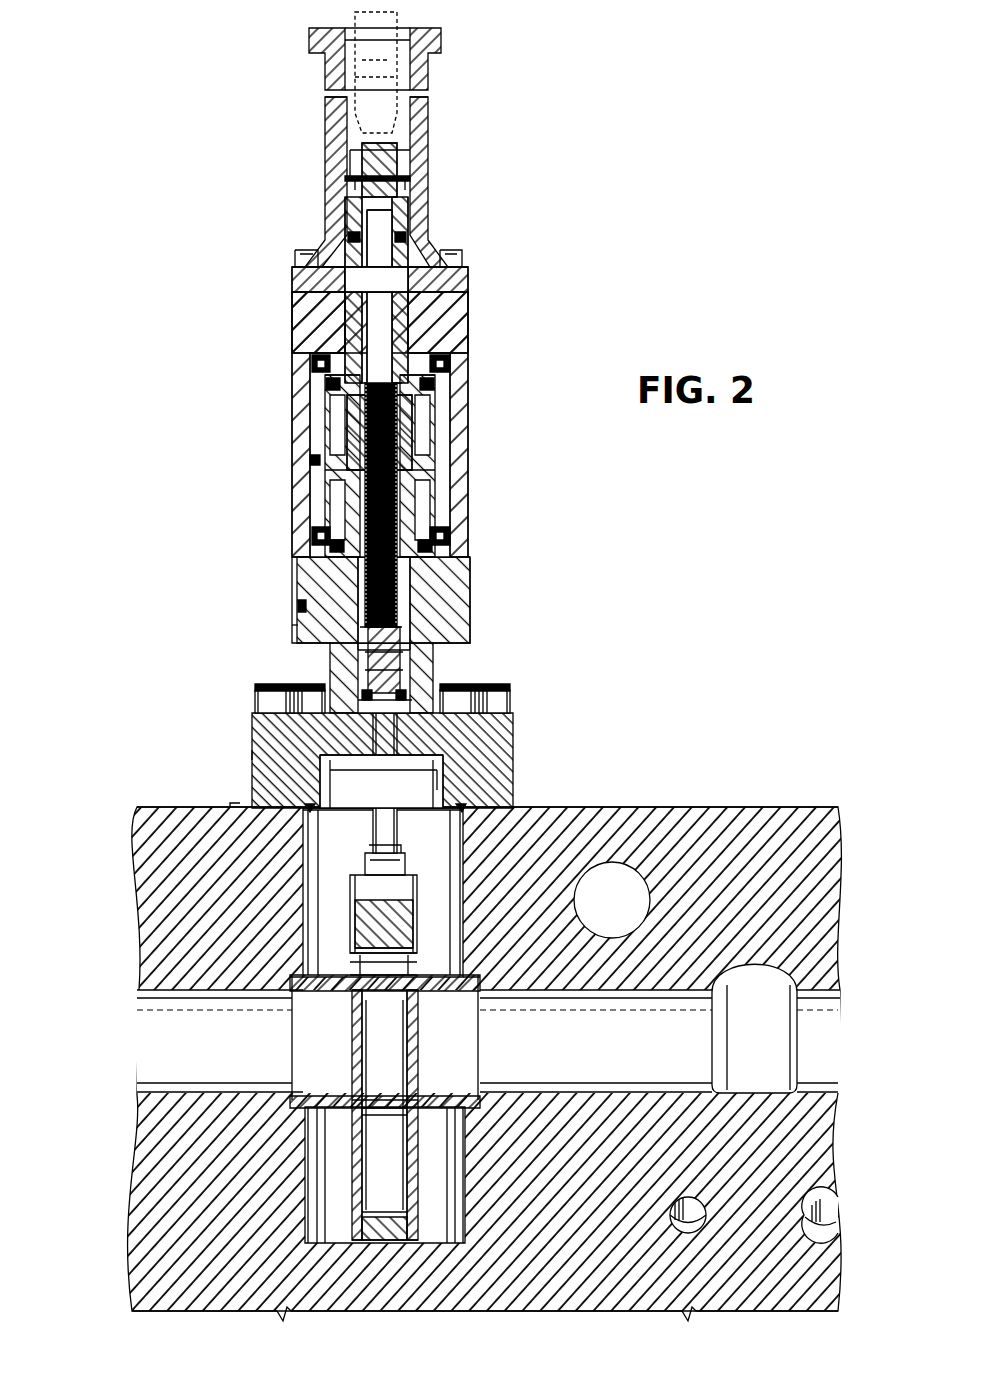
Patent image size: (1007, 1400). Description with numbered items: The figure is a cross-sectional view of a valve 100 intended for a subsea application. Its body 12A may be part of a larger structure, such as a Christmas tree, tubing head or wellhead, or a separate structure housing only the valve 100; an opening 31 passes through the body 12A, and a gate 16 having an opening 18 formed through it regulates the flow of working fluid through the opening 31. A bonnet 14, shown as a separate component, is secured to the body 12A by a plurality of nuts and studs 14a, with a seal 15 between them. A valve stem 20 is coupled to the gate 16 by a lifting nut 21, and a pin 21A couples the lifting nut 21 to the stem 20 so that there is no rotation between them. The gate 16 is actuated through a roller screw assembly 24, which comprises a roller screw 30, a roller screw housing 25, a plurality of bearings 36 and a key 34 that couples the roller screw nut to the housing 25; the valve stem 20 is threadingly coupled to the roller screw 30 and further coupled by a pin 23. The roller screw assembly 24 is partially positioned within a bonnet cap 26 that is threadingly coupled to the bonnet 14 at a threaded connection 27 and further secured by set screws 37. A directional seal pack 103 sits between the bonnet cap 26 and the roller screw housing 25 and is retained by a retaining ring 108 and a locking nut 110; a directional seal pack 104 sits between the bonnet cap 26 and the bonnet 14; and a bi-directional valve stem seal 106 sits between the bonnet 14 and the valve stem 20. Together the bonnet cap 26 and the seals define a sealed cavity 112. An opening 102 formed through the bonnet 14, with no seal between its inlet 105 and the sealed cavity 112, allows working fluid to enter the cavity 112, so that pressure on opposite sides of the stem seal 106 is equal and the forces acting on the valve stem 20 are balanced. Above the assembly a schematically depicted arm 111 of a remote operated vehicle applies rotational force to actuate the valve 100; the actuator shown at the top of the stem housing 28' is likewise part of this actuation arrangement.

The arm 111 is at (340, 62).
The stem housing tube 28' is at (410, 147).
The sealed cavity 112 is at (352, 236).
The roller screw housing 25 is at (430, 214).
The retaining ring 108 is at (340, 289).
The locking nut 110 is at (430, 290).
The directional seal pack 103 is at (343, 335).
The bonnet cap 26 is at (470, 318).
The bearings 36 is at (326, 364).
The key 34 is at (413, 437).
The roller screw assembly 24 is at (318, 461).
The roller screw 30 is at (387, 494).
The directional seal pack 104 is at (300, 566).
The opening 102 is at (428, 600).
The set screws 37 is at (297, 605).
The pin 23 is at (430, 658).
The threaded connection 27 is at (290, 627).
The nuts and studs 14a is at (513, 681).
The valve 100 is at (246, 752).
The bonnet 14 is at (507, 748).
The bi-directional valve stem seal 106 is at (367, 703).
The seal 15 is at (470, 806).
The inlet 105 is at (432, 762).
The body 12A is at (742, 808).
The valve stem 20 is at (377, 826).
The lifting nut 21 is at (350, 930).
The pin 21A is at (417, 950).
The opening 31 is at (142, 1002).
The opening 18 is at (400, 1216).
The gate 16 is at (417, 1228).